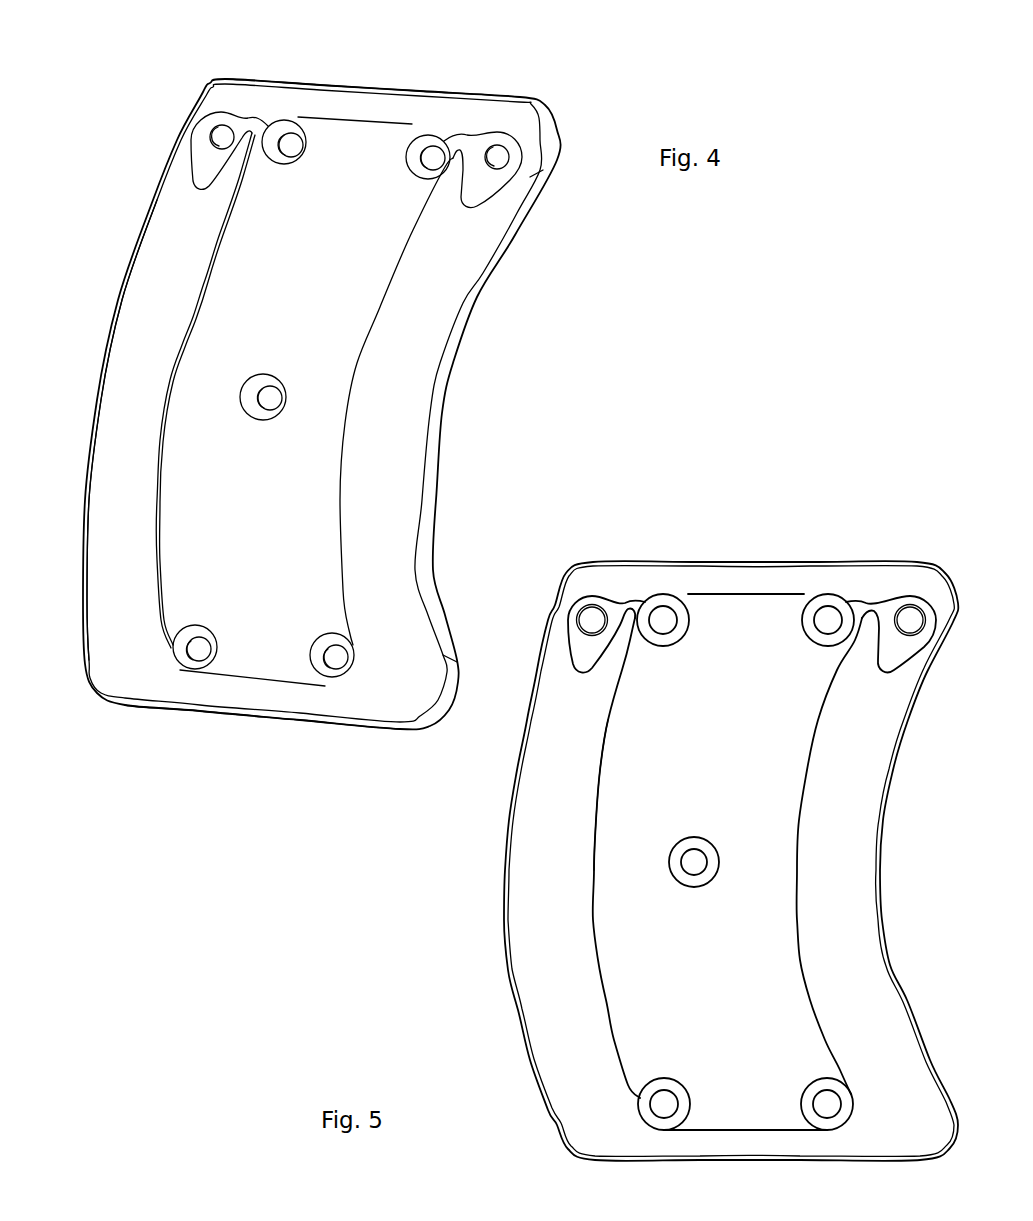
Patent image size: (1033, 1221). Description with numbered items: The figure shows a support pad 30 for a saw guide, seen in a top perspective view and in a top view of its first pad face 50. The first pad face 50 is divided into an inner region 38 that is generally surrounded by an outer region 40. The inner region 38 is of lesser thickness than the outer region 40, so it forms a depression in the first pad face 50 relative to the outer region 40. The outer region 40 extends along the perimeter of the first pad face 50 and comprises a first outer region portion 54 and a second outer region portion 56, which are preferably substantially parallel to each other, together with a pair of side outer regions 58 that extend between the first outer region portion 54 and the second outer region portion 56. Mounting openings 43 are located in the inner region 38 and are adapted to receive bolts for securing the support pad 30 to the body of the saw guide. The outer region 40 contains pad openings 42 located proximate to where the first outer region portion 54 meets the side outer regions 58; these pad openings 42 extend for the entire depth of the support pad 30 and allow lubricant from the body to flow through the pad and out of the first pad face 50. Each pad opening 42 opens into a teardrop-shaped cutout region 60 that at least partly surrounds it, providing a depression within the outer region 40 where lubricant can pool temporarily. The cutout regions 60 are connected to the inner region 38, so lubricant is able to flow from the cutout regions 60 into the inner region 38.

In FIG. 4, the support pad 30 is at (465, 306).
In FIG. 5, the support pad 30 is at (735, 562).
In FIG. 4, the inner region 38 is at (305, 527).
In FIG. 5, the inner region 38 is at (635, 965).
In FIG. 4, the outer region 40 is at (385, 427).
In FIG. 5, the outer region 40 is at (540, 898).
In FIG. 4, the pad opening 42 is at (222, 137).
In FIG. 5, the pad opening 42 is at (591, 612).
In FIG. 4, the mounting opening 43 is at (190, 635).
In FIG. 5, the mounting opening 43 is at (663, 1105).
In FIG. 5, the first pad face 50 is at (617, 818).
In FIG. 4, the first outer region portion 54 is at (374, 103).
In FIG. 4, the second outer region portion 56 is at (230, 690).
In FIG. 4, the side outer regions 58 is at (136, 328).
In FIG. 4, the cutout region 60 is at (208, 162).
In FIG. 5, the cutout region 60 is at (578, 645).